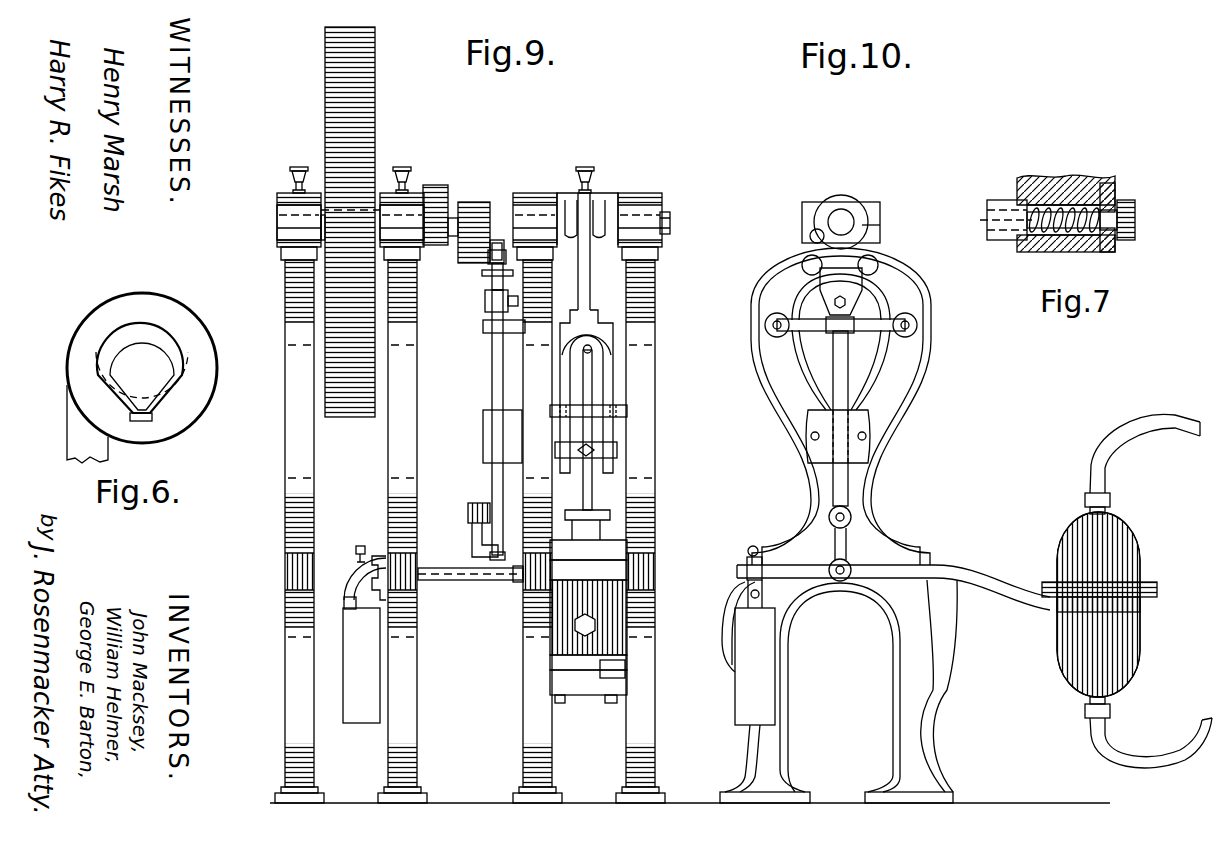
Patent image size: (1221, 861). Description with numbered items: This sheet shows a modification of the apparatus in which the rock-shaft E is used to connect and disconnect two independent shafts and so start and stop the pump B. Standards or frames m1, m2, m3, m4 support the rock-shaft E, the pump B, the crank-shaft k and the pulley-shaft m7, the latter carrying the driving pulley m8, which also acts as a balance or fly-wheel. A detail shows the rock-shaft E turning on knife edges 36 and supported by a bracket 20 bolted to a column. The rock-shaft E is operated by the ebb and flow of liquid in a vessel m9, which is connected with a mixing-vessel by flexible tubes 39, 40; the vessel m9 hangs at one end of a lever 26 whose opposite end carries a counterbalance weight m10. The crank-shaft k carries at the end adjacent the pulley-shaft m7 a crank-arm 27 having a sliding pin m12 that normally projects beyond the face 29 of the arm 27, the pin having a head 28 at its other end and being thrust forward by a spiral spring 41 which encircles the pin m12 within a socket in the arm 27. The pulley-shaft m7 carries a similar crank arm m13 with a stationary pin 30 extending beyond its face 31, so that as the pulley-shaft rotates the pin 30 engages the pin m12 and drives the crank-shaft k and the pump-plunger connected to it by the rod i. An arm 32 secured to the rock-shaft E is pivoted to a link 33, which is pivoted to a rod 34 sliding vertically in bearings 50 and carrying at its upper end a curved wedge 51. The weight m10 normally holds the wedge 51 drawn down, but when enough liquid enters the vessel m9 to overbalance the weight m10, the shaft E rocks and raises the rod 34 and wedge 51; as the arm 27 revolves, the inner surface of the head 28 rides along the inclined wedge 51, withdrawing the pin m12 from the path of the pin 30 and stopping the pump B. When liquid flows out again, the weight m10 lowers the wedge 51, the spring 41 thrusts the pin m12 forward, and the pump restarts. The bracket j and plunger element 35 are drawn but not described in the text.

In FIG. 6, the bracket 20 is at (205, 355).
In FIG. 6, the rock-shaft E is at (163, 340).
In FIG. 9, the rock-shaft E is at (441, 582).
In FIG. 10, the rock-shaft E is at (848, 566).
In FIG. 6, the knife edges 36 is at (145, 405).
In FIG. 7, the spiral spring 41 is at (1025, 200).
In FIG. 7, the face of the arm 29 is at (1018, 252).
In FIG. 9, the face of the arm 29 is at (462, 262).
In FIG. 7, the crank-arm 27 is at (1100, 250).
In FIG. 9, the crank-arm 27 is at (485, 300).
In FIG. 10, the crank-arm 27 is at (822, 215).
In FIG. 7, the head 28 is at (1135, 205).
In FIG. 9, the head 28 is at (503, 240).
In FIG. 10, the head 28 is at (815, 236).
In FIG. 7, the sliding pin m12 is at (1135, 228).
In FIG. 9, the sliding pin m12 is at (493, 260).
In FIG. 9, the standard m1 is at (285, 452).
In FIG. 9, the standard m2 is at (388, 452).
In FIG. 9, the standard m3 is at (538, 375).
In FIG. 10, the standard m3 is at (885, 437).
In FIG. 9, the standard m4 is at (656, 370).
In FIG. 9, the pulley-shaft m7 is at (322, 218).
In FIG. 9, the driving pulley m8 is at (368, 74).
In FIG. 9, the crank arm m13 is at (427, 192).
In FIG. 9, the stationary pin 30 is at (457, 203).
In FIG. 9, the face 31 is at (452, 202).
In FIG. 9, the crank-shaft k is at (498, 240).
In FIG. 10, the crank-shaft k is at (841, 222).
In FIG. 9, the bracket j is at (610, 195).
In FIG. 9, the rod i is at (590, 277).
In FIG. 9, the curved wedge 51 is at (482, 264).
In FIG. 10, the curved wedge 51 is at (842, 278).
In FIG. 9, the plunger 35 is at (592, 490).
In FIG. 9, the pump B is at (597, 603).
In FIG. 9, the rod 34 is at (493, 392).
In FIG. 10, the rod 34 is at (838, 367).
In FIG. 9, the bearings 50 is at (485, 330).
In FIG. 10, the bearings 50 is at (858, 330).
In FIG. 9, the link 33 is at (480, 503).
In FIG. 9, the arm 32 is at (470, 543).
In FIG. 10, the arm 32 is at (835, 545).
In FIG. 9, the lever 26 is at (356, 590).
In FIG. 10, the lever 26 is at (960, 580).
In FIG. 9, the counterbalance weight m10 is at (368, 675).
In FIG. 10, the counterbalance weight m10 is at (760, 682).
In FIG. 10, the vessel m9 is at (1128, 643).
In FIG. 10, the flexible tube 40 is at (1130, 432).
In FIG. 10, the flexible tube 39 is at (1115, 752).